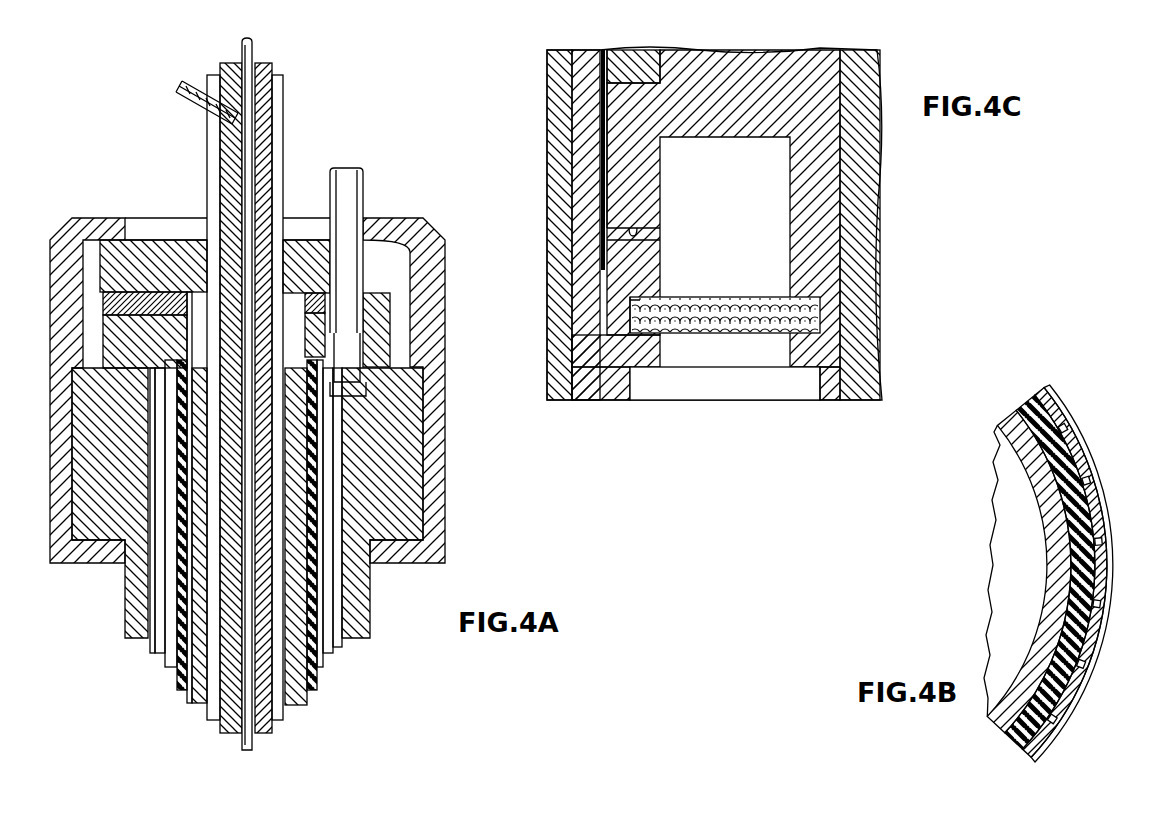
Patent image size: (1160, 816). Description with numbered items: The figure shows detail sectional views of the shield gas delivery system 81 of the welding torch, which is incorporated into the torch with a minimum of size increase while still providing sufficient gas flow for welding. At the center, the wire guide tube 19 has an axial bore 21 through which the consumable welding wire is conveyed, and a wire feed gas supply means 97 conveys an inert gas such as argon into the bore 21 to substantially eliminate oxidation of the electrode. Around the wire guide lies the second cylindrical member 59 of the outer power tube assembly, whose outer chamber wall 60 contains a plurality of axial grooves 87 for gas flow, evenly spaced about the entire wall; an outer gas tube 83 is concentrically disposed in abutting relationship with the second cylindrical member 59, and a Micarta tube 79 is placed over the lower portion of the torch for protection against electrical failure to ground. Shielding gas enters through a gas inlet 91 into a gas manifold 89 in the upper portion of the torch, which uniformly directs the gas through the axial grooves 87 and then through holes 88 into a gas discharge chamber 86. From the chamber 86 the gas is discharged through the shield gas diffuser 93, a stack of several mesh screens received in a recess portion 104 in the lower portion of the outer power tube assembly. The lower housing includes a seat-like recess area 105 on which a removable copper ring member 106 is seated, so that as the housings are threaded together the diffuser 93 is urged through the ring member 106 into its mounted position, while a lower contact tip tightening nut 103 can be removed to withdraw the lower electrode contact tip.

In FIG. 4A, the bore 21 is at (253, 48).
In FIG. 4A, the wire guide tube 19 is at (266, 104).
In FIG. 4A, the wire feed gas supply means 97 is at (180, 106).
In FIG. 4A, the gas inlet 91 is at (345, 180).
In FIG. 4A, the shield gas delivery system 81 is at (362, 343).
In FIG. 4A, the gas manifold 89 is at (350, 380).
In FIG. 4A, the outer gas tube 83 is at (152, 650).
In FIG. 4C, the outer gas tube 83 is at (580, 152).
In FIG. 4B, the outer gas tube 83 is at (1058, 400).
In FIG. 4A, the axial grooves 87 is at (160, 666).
In FIG. 4C, the axial grooves 87 is at (578, 70).
In FIG. 4B, the axial grooves 87 is at (1108, 568).
In FIG. 4A, the second cylindrical member 59 is at (168, 676).
In FIG. 4C, the outer chamber wall 60 is at (637, 54).
In FIG. 4B, the outer chamber wall 60 is at (1090, 497).
In FIG. 4C, the Micarta tube 79 is at (560, 114).
In FIG. 4C, the gas discharge chamber 86 is at (773, 177).
In FIG. 4C, the holes 88 is at (631, 228).
In FIG. 4C, the recess portion 104 is at (640, 300).
In FIG. 4C, the shield gas diffuser 93 is at (730, 300).
In FIG. 4C, the lower contact tip tightening nut 103 is at (870, 378).
In FIG. 4C, the seat-like recess area 105 is at (590, 365).
In FIG. 4C, the copper ring member 106 is at (663, 358).